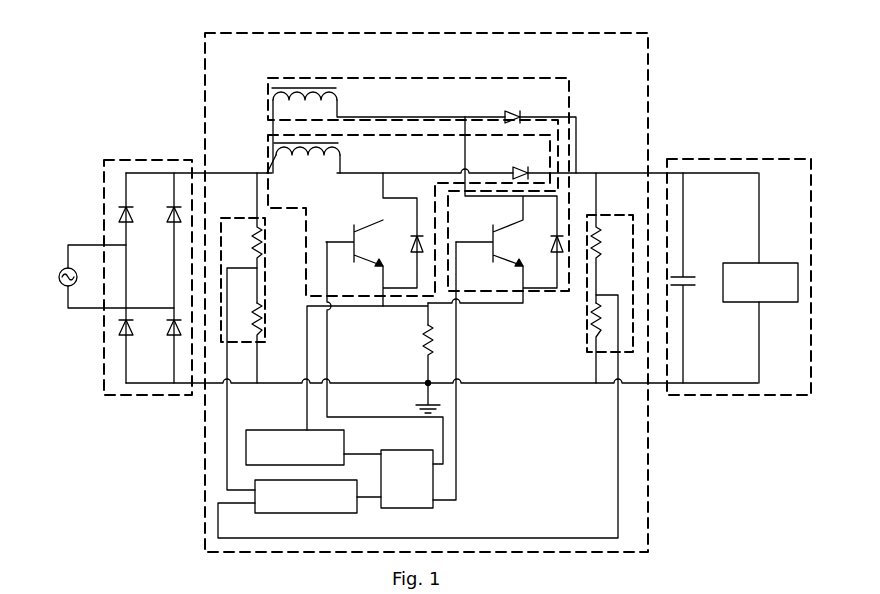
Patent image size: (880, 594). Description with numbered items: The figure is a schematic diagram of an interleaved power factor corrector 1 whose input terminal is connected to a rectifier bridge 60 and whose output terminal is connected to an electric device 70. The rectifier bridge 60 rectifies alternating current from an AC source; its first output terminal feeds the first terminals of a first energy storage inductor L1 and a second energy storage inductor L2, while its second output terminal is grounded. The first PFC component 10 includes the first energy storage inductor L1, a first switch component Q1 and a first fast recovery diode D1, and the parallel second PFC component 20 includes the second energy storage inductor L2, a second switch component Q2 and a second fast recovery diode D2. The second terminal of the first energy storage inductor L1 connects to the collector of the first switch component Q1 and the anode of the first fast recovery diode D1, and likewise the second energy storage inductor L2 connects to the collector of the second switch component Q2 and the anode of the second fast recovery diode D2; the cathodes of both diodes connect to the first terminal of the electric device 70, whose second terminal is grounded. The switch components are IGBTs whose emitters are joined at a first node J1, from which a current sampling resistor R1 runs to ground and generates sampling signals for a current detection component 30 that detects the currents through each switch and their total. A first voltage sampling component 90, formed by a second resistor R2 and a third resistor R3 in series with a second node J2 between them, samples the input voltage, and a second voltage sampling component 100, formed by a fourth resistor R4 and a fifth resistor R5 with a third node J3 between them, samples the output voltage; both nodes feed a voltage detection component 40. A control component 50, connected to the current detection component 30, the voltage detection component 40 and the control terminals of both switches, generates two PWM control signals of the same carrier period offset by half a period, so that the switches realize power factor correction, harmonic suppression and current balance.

The interleaved power factor corrector 1 is at (442, 292).
The first PFC component 10 is at (495, 241).
The second PFC component 20 is at (570, 99).
The current detection component 30 is at (313, 447).
The voltage detection component 40 is at (318, 496).
The control component 50 is at (407, 479).
The rectifier bridge 60 is at (133, 159).
The electric device 70 is at (707, 159).
The first voltage sampling component 90 is at (261, 331).
The second voltage sampling component 100 is at (430, 355).
The first energy storage inductor L1 is at (303, 158).
The second energy storage inductor L2 is at (388, 130).
The first fast recovery diode D1 is at (519, 163).
The second fast recovery diode D2 is at (537, 131).
The first switch component Q1 is at (374, 239).
The second switch component Q2 is at (495, 210).
The current sampling resistor R1 is at (371, 369).
The second resistor R2 is at (244, 238).
The third resistor R3 is at (244, 343).
The fourth resistor R4 is at (608, 238).
The fifth resistor R5 is at (607, 343).
The first node J1 is at (376, 366).
The second node J2 is at (242, 379).
The third node J3 is at (418, 407).